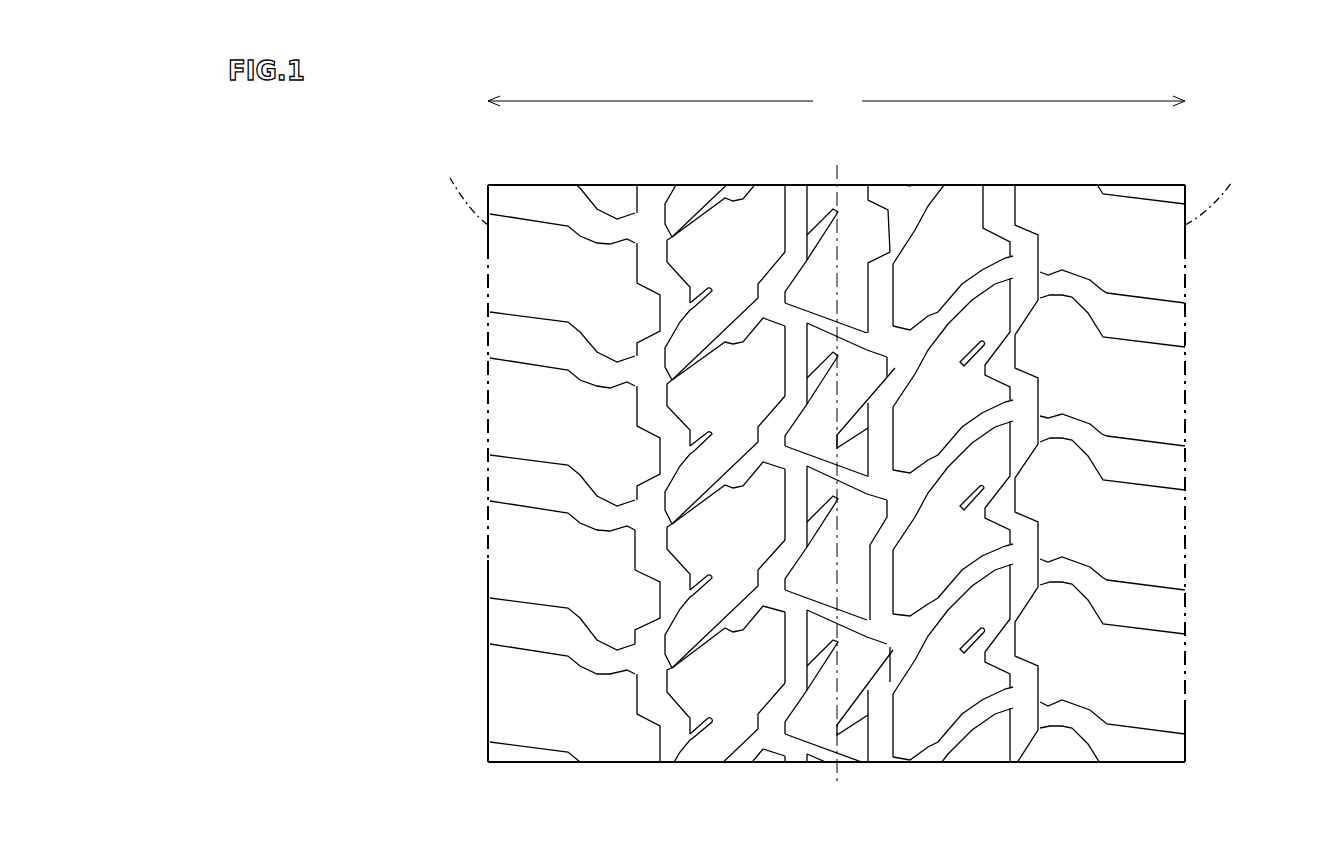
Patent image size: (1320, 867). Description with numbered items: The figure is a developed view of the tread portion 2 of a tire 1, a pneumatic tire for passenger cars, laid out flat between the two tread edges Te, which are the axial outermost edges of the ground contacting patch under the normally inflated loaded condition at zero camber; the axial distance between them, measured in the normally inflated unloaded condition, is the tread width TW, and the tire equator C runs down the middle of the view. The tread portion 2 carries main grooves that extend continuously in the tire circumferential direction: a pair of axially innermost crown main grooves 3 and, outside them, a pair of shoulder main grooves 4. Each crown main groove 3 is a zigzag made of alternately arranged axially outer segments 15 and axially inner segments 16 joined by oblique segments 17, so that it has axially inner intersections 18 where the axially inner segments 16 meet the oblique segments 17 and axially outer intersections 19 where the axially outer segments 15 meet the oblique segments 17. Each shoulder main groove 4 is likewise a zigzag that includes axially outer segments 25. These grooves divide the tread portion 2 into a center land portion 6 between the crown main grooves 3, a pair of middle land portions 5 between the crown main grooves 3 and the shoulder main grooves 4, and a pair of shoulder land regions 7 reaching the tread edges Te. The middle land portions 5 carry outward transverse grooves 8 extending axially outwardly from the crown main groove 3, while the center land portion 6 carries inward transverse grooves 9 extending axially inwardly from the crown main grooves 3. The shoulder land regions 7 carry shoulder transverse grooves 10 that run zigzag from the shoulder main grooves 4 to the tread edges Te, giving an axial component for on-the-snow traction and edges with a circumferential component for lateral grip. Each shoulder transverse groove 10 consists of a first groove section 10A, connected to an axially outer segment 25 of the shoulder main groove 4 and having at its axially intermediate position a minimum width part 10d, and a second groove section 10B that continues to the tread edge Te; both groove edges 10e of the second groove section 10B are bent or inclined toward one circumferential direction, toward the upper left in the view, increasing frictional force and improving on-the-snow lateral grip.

The tire 1 is at (1272, 133).
The tread portion 2 is at (1205, 170).
The tread edges Te is at (846, 452).
The tread width TW is at (836, 101).
The tire equator C is at (833, 462).
The crown main grooves 3 is at (797, 228).
The shoulder main grooves 4 is at (655, 245).
The middle land portions 5 is at (725, 243).
The center land portion 6 is at (852, 222).
The shoulder land regions 7 is at (560, 245).
The outward transverse grooves 8 is at (708, 653).
The inward transverse grooves 9 is at (853, 622).
The shoulder transverse grooves 10 is at (503, 472).
The first groove section 10A is at (635, 512).
The second groove section 10B is at (523, 493).
The minimum width part 10d is at (623, 520).
The groove edges 10e is at (535, 457).
The axially outer segments 15 is at (903, 647).
The axially inner segments 16 is at (880, 730).
The oblique segments 17 is at (893, 680).
The axially inner intersections 18 is at (793, 607).
The axially outer intersections 19 is at (765, 597).
The axially outer segments 25 is at (650, 557).